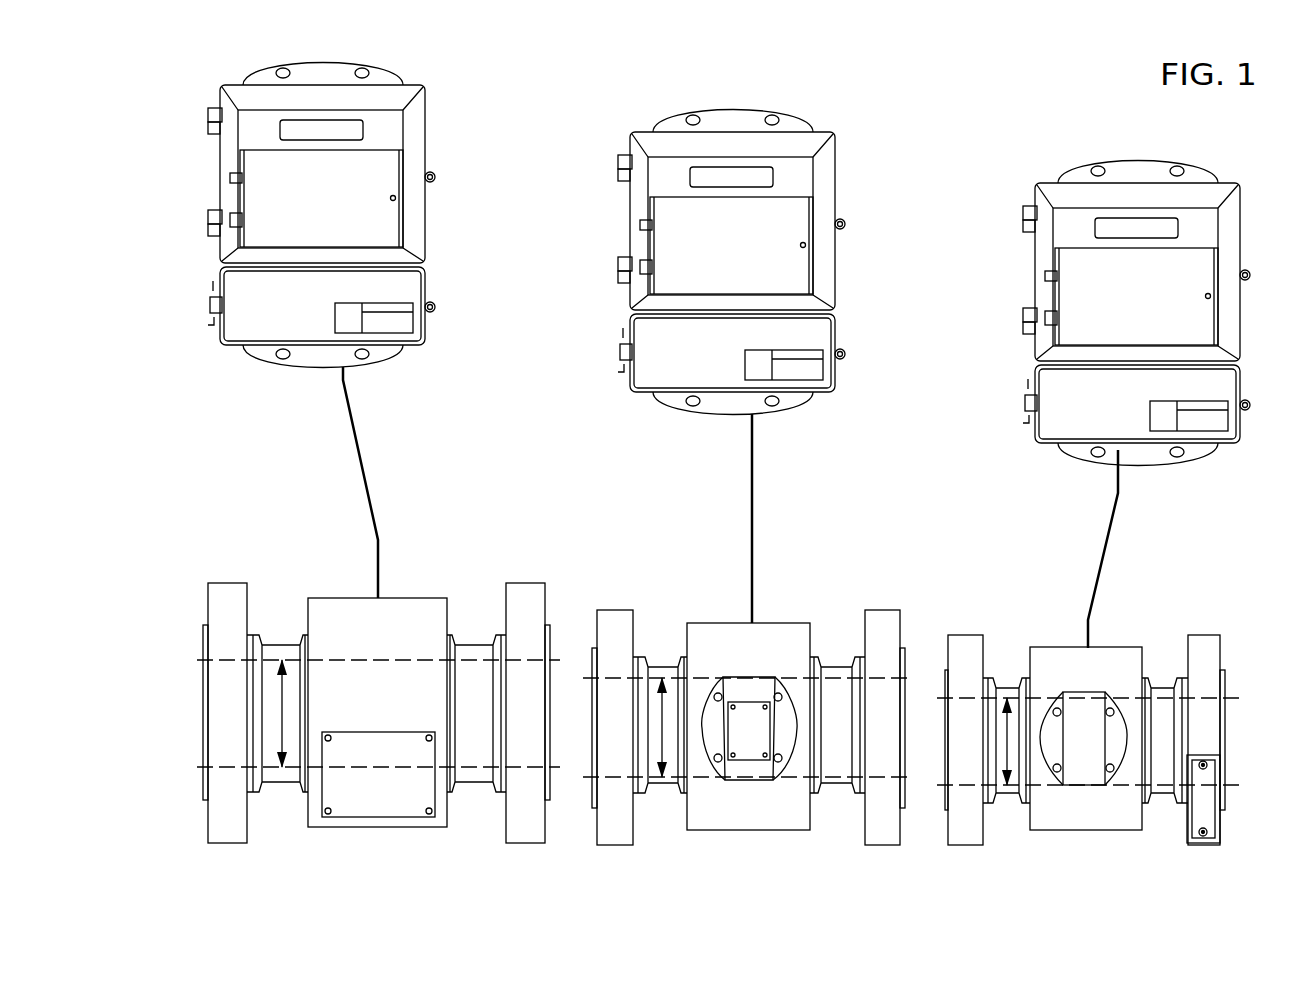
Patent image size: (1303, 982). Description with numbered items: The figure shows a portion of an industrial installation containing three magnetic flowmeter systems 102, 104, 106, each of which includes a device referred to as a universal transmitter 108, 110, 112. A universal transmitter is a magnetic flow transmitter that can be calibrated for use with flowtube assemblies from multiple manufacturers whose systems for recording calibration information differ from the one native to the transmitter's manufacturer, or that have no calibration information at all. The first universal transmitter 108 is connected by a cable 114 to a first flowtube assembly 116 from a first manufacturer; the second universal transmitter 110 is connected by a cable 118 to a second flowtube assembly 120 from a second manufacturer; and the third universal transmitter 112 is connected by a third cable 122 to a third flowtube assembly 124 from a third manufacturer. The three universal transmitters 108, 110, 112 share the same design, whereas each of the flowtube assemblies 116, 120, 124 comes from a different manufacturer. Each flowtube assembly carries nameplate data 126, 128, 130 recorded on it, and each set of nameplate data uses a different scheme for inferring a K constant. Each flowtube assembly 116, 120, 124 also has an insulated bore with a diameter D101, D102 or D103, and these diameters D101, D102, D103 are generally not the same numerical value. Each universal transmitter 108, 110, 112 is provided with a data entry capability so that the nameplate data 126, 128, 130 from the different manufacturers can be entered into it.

The magnetic flowmeter system 102 is at (463, 183).
The magnetic flowmeter system 104 is at (575, 308).
The magnetic flowmeter system 106 is at (980, 327).
The first universal transmitter 108 is at (321, 215).
The second universal transmitter 110 is at (731, 262).
The third universal transmitter 112 is at (1136, 313).
The cable 114 is at (371, 498).
The first flowtube assembly 116 is at (378, 691).
The cable 118 is at (753, 533).
The second flowtube assembly 120 is at (745, 703).
The third cable 122 is at (1115, 505).
The third flowtube assembly 124 is at (1108, 710).
The nameplate data 126 is at (374, 793).
The nameplate data 128 is at (743, 762).
The nameplate data 130 is at (1212, 820).
The diameter D101 is at (282, 660).
The diameter D102 is at (662, 678).
The diameter D103 is at (1007, 698).